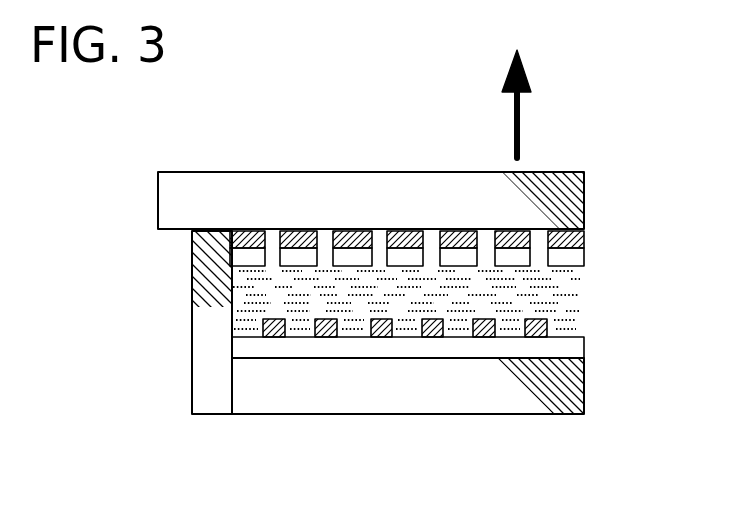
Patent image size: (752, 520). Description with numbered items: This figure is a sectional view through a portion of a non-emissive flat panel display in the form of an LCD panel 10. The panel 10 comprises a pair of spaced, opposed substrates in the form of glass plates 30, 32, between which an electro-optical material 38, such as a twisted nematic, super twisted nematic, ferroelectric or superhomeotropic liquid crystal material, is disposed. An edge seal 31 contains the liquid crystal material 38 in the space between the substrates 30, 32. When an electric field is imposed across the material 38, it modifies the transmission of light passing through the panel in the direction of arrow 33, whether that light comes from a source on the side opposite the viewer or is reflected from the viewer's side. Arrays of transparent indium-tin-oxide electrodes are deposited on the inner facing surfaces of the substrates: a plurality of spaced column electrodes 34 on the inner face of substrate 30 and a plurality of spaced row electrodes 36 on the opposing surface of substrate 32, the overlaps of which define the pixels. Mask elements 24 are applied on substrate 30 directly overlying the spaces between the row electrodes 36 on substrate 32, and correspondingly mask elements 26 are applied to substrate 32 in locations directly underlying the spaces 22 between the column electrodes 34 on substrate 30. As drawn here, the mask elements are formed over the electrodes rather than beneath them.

The LCD panel 10 is at (140, 153).
The spaces between electrodes 22 is at (433, 237).
The mask elements 24 is at (297, 258).
The mask elements 26 is at (495, 337).
The substrate 30 is at (584, 197).
The edge seal 31 is at (206, 343).
The substrate 32 is at (584, 383).
The arrow 33 is at (520, 128).
The column electrodes 34 is at (243, 232).
The row electrodes 36 is at (584, 348).
The electro-optical material 38 is at (232, 310).